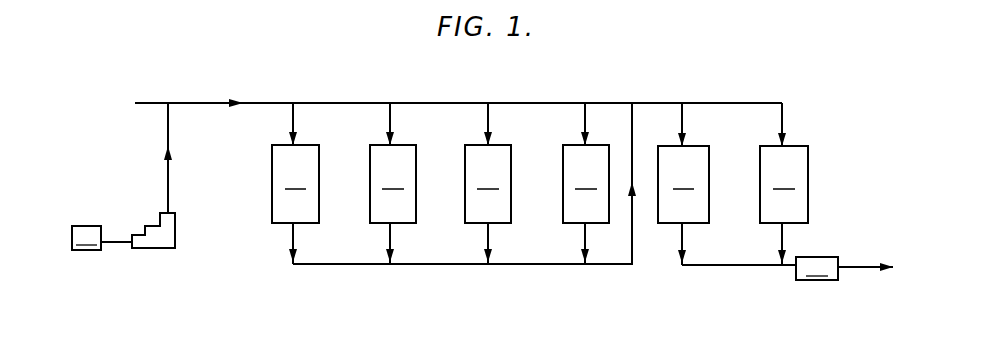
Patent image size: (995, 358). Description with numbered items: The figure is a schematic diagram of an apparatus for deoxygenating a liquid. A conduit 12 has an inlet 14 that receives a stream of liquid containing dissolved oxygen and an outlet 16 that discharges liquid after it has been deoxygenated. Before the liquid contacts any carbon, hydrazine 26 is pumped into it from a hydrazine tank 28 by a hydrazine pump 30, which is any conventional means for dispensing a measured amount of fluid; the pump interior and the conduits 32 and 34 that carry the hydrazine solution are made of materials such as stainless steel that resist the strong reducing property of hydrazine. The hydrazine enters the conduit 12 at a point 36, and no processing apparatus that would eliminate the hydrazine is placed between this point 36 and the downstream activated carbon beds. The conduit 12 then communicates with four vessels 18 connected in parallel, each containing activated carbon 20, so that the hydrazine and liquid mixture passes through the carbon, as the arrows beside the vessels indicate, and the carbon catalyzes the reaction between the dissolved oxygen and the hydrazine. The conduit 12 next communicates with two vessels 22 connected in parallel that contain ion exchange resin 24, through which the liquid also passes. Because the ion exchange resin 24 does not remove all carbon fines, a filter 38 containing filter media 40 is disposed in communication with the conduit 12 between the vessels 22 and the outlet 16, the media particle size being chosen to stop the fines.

The conduit 12 is at (257, 101).
The inlet 14 is at (135, 103).
The outlet 16 is at (891, 270).
The vessels 18 is at (370, 204).
The activated carbon 20 is at (440, 183).
The vessels 22 is at (760, 204).
The ion exchange resin 24 is at (733, 184).
The hydrazine 26 is at (86, 238).
The hydrazine tank 28 is at (93, 250).
The hydrazine pump 30 is at (176, 237).
The conduit 32 is at (120, 242).
The conduit 34 is at (168, 180).
The point 36 is at (170, 105).
The filter 38 is at (826, 281).
The filter media 40 is at (817, 268).